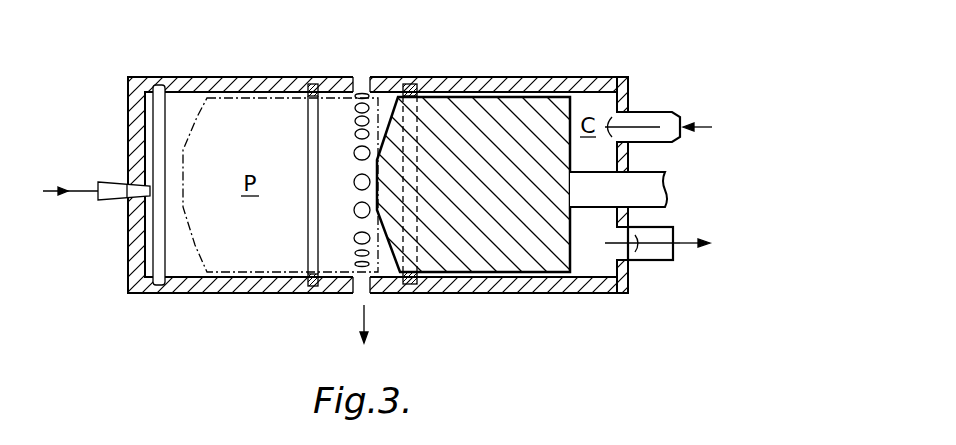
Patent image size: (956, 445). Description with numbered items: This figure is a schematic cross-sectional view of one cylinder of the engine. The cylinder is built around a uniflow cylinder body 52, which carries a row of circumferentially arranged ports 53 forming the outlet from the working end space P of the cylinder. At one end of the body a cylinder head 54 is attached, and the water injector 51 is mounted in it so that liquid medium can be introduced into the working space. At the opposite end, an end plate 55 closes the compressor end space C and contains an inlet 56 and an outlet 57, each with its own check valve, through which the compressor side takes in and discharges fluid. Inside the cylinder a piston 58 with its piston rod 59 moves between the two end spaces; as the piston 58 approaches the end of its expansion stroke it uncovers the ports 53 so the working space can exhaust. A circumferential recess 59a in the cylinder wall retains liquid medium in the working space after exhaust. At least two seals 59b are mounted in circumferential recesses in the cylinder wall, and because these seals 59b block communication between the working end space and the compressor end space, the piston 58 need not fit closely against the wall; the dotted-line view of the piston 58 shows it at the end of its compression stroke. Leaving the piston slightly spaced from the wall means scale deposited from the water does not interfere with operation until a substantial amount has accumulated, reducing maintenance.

The water injector 51 is at (112, 182).
The uniflow cylinder body 52 is at (445, 77).
The ports 53 is at (367, 253).
The cylinder head 54 is at (128, 100).
The end plate 55 is at (628, 106).
The inlet 56 is at (664, 142).
The outlet 57 is at (664, 260).
The piston 58 is at (235, 92).
The piston rod 59 is at (668, 196).
The circumferential recess 59a is at (158, 85).
The seals 59b is at (313, 84).